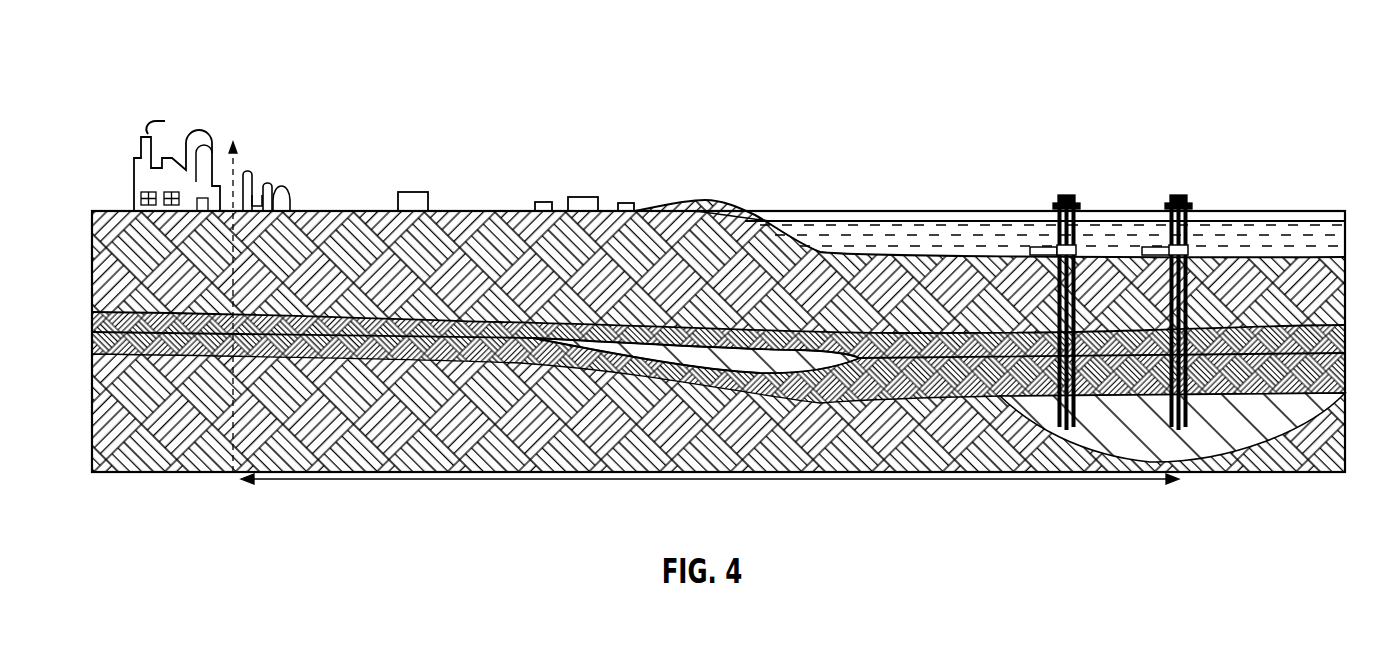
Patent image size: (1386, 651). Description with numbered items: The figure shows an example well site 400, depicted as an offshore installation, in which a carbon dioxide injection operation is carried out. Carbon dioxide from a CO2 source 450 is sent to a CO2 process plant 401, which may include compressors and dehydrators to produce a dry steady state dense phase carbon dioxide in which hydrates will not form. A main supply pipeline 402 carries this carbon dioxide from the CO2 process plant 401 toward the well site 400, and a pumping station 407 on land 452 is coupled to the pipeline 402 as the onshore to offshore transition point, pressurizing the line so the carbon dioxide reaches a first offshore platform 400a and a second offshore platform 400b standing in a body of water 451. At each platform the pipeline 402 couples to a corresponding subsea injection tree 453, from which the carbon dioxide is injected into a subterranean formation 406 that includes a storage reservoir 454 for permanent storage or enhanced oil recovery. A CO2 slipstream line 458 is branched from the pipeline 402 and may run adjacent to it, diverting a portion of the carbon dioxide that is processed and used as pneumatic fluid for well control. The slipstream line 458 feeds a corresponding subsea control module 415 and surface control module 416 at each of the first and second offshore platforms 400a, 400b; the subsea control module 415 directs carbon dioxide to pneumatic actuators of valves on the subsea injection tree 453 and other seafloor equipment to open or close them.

The well site 400 is at (1127, 230).
The first offshore platform 400a is at (1067, 195).
The second offshore platform 400b is at (1178, 196).
The CO2 process plant 401 is at (266, 186).
The main supply pipeline 402 is at (802, 241).
The subterranean formation 406 is at (577, 438).
The pumping station 407 is at (582, 196).
The subsea control module 415 is at (1040, 247).
The surface control module 416 is at (1060, 198).
The CO2 source 450 is at (198, 138).
The body of water 451 is at (1283, 232).
The land 452 is at (515, 209).
The subsea injection tree 453 is at (1076, 250).
The storage reservoir 454 is at (1133, 445).
The CO2 slipstream line 458 is at (675, 200).